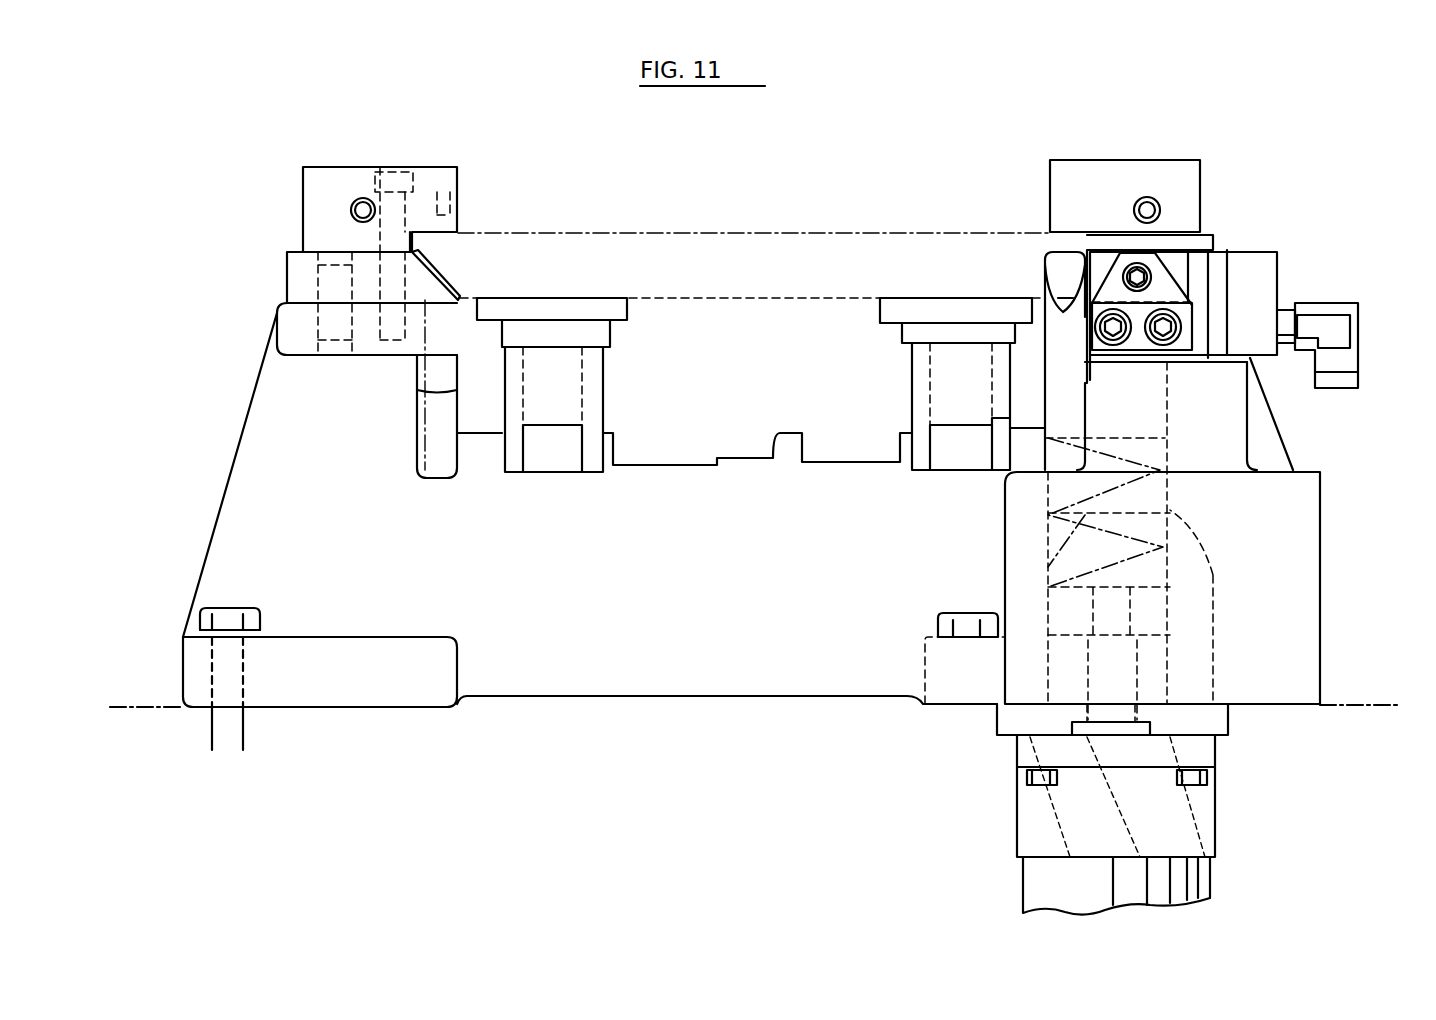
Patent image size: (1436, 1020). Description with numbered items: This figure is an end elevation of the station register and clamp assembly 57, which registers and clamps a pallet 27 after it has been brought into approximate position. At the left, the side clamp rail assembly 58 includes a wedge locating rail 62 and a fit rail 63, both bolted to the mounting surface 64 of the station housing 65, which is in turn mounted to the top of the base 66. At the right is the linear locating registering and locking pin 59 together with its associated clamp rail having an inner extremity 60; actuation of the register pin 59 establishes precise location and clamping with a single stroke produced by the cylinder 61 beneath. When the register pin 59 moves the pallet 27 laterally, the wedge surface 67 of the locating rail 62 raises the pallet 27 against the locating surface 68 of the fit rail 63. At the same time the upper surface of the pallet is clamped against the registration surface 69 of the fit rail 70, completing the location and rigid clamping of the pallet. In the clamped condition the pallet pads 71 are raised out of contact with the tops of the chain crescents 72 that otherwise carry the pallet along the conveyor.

The pallet 27 is at (650, 243).
The station register and clamp assembly 57 is at (1342, 425).
The side clamp rail assembly 58 is at (486, 210).
The linear locating registering and locking pin 59 is at (1020, 360).
The inner extremity of clamp rail 60 is at (1048, 190).
The cylinder 61 is at (1025, 877).
The wedge locating rail 62 is at (290, 260).
The fit rail 63 is at (328, 167).
The mounting surface 64 is at (290, 305).
The station housing 65 is at (368, 490).
The base 66 is at (368, 705).
The wedge surface 67 is at (452, 282).
The locating surface 68 is at (438, 240).
The registration surface 69 is at (1050, 245).
The fit rail 70 is at (1118, 160).
The pallet pads 71 is at (553, 303).
The chain crescents 72 is at (606, 320).